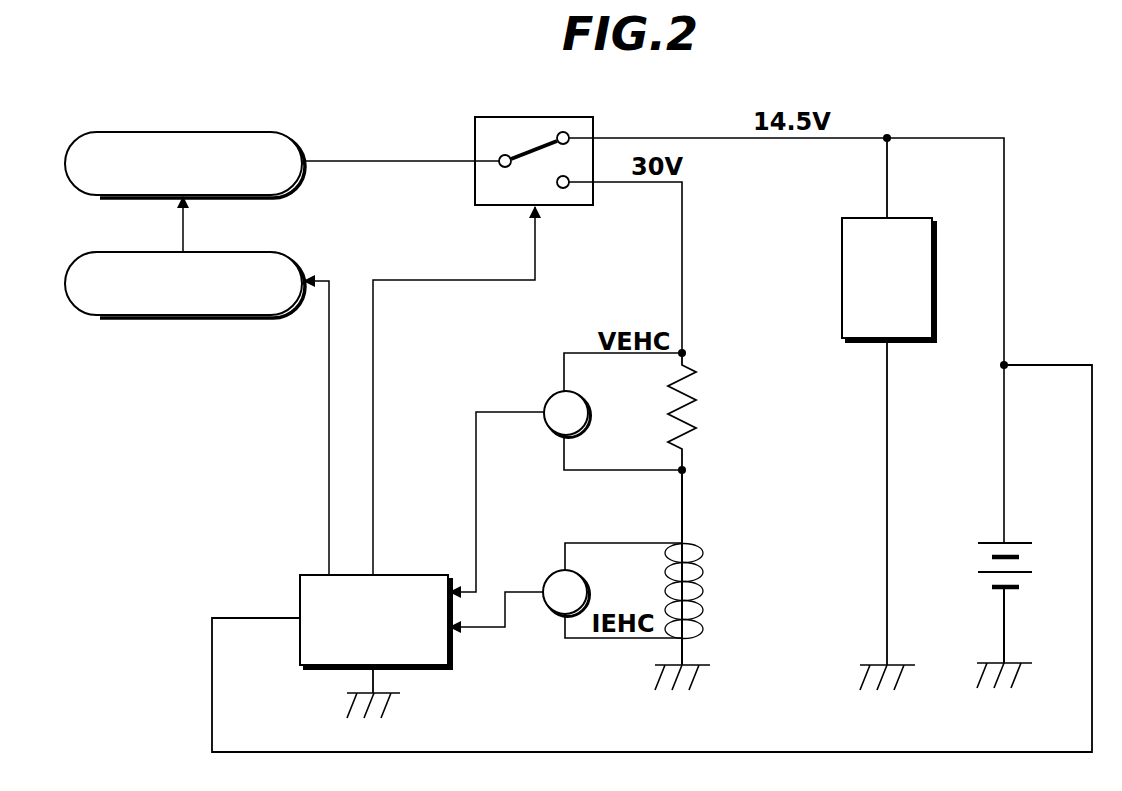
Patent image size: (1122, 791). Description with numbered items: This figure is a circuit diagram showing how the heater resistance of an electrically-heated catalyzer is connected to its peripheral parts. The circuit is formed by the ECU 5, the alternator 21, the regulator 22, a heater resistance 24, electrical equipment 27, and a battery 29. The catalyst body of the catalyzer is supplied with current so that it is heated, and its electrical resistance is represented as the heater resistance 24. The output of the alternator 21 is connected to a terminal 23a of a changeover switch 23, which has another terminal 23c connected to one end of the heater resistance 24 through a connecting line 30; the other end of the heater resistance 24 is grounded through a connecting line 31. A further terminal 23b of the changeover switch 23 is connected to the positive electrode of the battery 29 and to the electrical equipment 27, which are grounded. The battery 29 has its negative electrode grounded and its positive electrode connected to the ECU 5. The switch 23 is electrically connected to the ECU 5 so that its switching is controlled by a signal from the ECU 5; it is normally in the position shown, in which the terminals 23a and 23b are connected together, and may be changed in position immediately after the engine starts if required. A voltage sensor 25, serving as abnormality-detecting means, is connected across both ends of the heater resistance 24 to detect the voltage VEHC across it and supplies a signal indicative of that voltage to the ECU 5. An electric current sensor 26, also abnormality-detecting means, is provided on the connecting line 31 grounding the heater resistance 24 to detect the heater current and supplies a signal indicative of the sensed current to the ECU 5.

The ECU 5 is at (302, 575).
The alternator 21 is at (293, 140).
The regulator 22 is at (293, 260).
The changeover switch 23 is at (543, 168).
The terminal 23a is at (500, 157).
The terminal 23b is at (570, 134).
The terminal 23c is at (568, 188).
The heater resistance 24 is at (700, 385).
The voltage sensor 25 is at (545, 393).
The electric current sensor 26 is at (548, 572).
The electrical equipment 27 is at (932, 262).
The battery 29 is at (1035, 558).
The connecting line 30 is at (682, 248).
The connecting line 31 is at (700, 502).